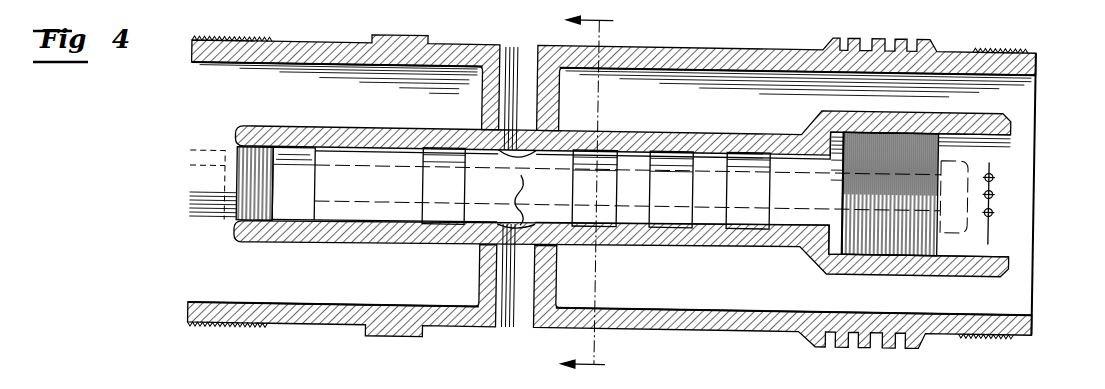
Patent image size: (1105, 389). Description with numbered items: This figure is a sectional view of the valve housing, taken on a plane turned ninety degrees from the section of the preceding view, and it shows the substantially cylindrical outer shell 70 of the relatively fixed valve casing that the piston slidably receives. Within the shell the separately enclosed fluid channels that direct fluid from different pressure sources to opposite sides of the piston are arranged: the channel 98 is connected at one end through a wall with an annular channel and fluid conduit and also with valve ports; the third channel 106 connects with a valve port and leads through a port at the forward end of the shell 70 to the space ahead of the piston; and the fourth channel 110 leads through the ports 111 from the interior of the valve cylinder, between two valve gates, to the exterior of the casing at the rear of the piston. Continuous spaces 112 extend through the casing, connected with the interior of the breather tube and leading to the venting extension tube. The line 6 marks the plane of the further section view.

The cylindrical outer shell 70 is at (307, 40).
The continuous spaces 112 is at (237, 94).
The third channel 106 is at (797, 191).
The channel 98 is at (292, 189).
The fourth channel 110 is at (520, 313).
The ports 111 is at (516, 189).
The section line 6- 6 is at (597, 192).